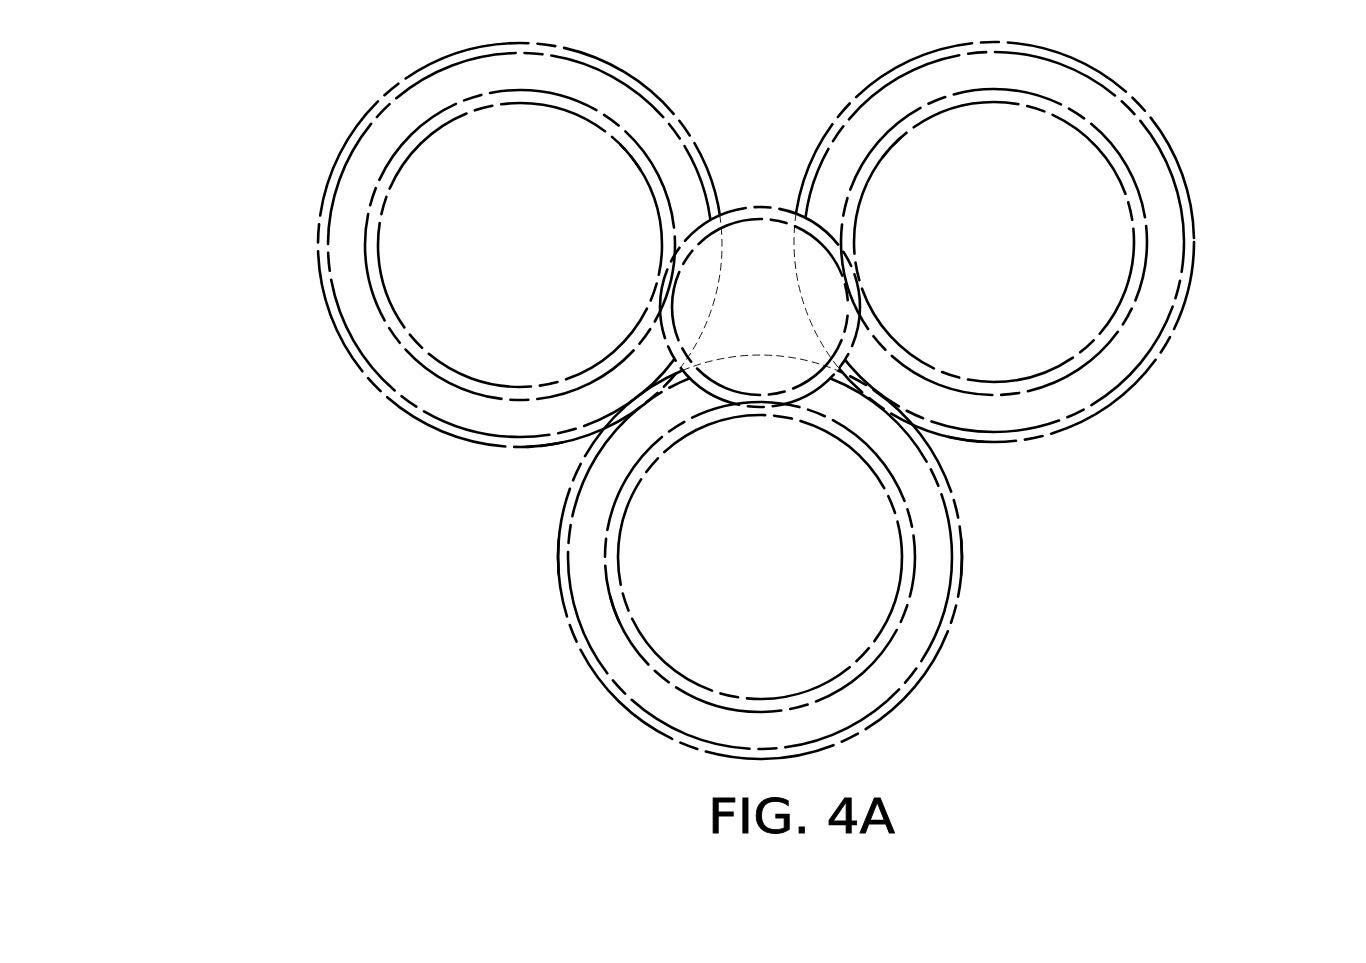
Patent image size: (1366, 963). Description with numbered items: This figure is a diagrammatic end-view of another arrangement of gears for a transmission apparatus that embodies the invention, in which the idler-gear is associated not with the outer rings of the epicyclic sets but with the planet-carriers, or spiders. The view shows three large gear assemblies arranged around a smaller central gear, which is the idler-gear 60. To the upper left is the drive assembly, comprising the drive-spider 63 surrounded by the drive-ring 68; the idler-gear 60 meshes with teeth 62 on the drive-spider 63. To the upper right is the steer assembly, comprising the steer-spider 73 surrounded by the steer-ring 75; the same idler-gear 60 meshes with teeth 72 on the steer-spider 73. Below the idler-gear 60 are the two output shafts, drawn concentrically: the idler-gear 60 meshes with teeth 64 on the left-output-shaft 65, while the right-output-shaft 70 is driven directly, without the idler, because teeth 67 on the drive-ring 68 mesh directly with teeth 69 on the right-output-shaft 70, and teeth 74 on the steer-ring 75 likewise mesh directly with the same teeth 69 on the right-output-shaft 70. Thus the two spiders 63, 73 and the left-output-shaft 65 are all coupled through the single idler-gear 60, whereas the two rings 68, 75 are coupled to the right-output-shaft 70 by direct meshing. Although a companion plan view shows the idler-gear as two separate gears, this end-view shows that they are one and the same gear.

The idler-gear 60 is at (775, 348).
The teeth 62 is at (635, 153).
The drive-spider 63 is at (552, 287).
The teeth 64 is at (619, 610).
The left-output-shaft 65 is at (778, 597).
The teeth 67 is at (543, 438).
The drive-ring 68 is at (380, 150).
The teeth 69 is at (553, 567).
The right-output-shaft 70 is at (892, 660).
The teeth 72 is at (888, 145).
The steer-spider 73 is at (1018, 287).
The teeth 74 is at (970, 433).
The steer-ring 75 is at (1105, 112).